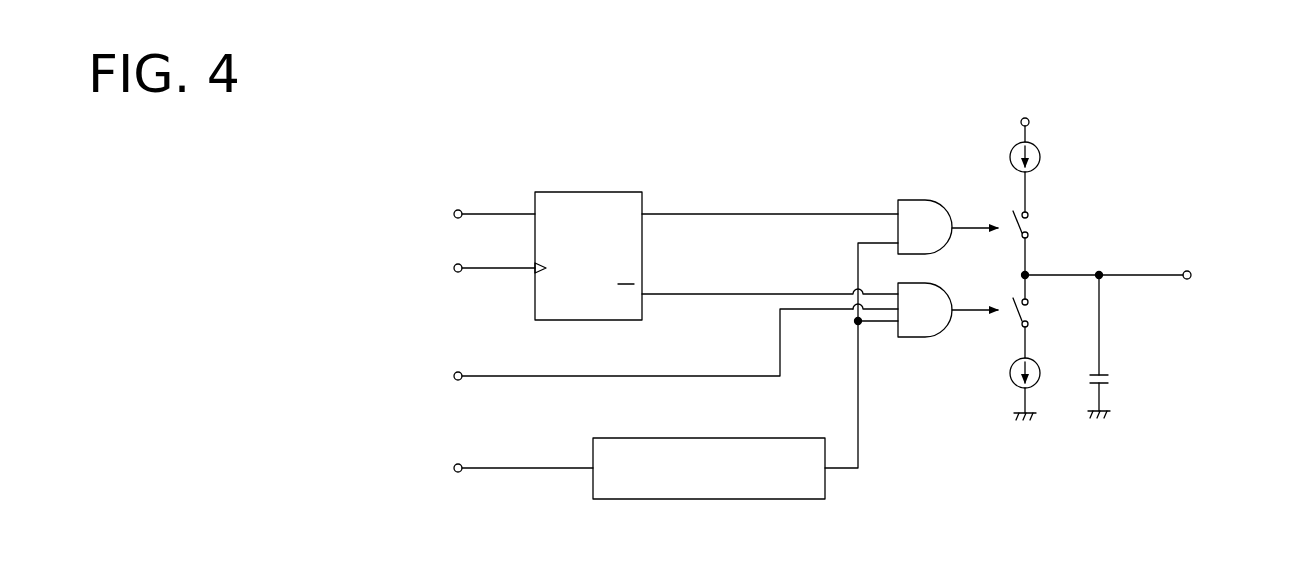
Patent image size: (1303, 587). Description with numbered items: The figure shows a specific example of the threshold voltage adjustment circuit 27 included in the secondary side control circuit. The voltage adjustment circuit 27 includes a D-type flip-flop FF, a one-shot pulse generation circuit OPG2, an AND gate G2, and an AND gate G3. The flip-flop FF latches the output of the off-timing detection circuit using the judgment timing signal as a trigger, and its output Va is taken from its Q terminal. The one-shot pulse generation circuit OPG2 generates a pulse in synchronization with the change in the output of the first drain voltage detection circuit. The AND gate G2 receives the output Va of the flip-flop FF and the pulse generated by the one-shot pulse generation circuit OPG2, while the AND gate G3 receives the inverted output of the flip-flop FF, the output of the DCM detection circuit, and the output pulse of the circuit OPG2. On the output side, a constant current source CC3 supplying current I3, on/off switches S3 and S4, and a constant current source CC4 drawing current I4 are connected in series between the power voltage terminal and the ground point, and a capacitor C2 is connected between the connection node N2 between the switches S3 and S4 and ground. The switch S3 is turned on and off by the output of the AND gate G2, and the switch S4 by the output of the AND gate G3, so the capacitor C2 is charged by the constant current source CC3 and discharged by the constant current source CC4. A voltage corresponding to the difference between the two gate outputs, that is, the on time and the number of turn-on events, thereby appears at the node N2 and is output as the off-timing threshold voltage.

The voltage adjustment circuit 27 is at (675, 90).
The D-type flip-flop FF is at (643, 196).
The flip-flop output signal Va is at (770, 201).
The AND gate G2 is at (917, 198).
The AND gate G3 is at (923, 340).
The one-shot pulse generation circuit OPG2 is at (740, 437).
The constant current source CC3 is at (1037, 150).
The constant current I3 is at (1038, 157).
The on/off switch S3 is at (1028, 227).
The connection node N2 is at (1021, 273).
The on/off switch S4 is at (1028, 317).
The constant current source CC4 is at (1011, 381).
The constant current I4 is at (1038, 373).
The capacitor C2 is at (1117, 345).